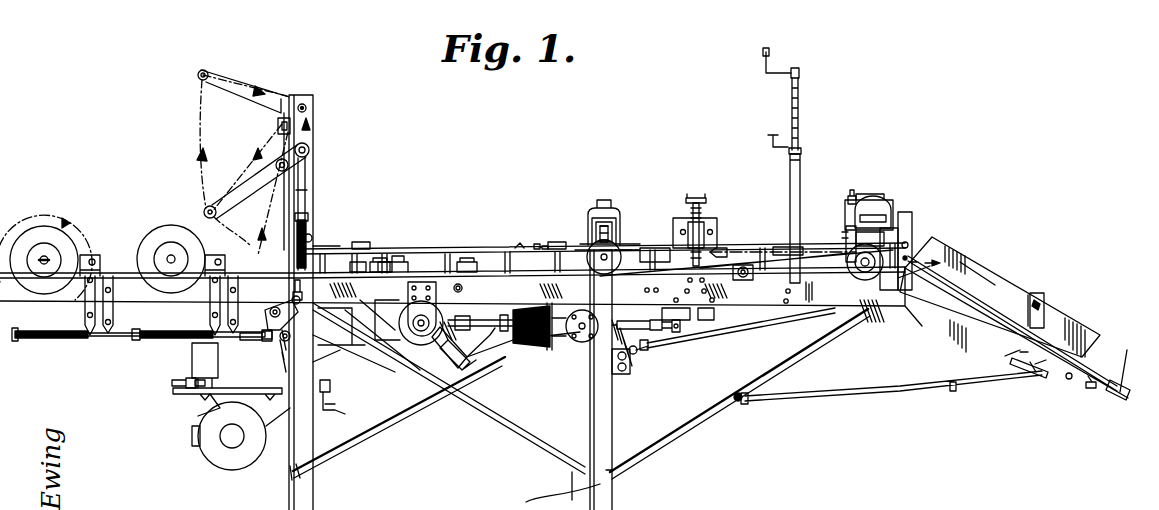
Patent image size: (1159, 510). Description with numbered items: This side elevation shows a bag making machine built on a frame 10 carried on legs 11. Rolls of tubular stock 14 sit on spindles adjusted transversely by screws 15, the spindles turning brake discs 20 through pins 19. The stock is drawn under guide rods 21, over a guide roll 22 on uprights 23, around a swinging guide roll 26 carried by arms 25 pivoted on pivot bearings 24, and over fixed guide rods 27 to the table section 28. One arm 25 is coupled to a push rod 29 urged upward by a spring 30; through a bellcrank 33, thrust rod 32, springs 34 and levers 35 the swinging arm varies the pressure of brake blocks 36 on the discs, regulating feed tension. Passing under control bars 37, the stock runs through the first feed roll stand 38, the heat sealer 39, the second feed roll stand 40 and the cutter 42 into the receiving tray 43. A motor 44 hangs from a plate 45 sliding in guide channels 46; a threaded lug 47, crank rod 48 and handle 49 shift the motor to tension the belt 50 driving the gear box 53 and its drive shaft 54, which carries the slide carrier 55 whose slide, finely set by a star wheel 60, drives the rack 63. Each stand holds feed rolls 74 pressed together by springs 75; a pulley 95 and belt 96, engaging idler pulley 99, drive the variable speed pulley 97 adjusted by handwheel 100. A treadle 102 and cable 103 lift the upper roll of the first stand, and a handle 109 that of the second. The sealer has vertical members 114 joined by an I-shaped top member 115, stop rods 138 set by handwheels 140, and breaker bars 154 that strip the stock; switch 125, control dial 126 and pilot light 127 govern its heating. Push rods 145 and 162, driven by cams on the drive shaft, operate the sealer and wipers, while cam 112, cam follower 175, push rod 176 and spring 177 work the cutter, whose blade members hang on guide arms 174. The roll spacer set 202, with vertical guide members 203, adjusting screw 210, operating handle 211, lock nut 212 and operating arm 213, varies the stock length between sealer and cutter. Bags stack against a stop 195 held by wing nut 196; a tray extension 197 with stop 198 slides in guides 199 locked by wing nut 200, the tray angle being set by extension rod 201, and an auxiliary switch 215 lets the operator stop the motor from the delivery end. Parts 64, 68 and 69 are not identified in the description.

The frame 10 is at (752, 300).
The legs 11 is at (303, 494).
The tubular stock 14 is at (65, 216).
The screws 15 is at (851, 230).
The pins 19 is at (170, 259).
The brake discs 20 is at (166, 236).
The guide rods 21 is at (108, 340).
The guide roll 22 is at (278, 124).
The uprights 23 is at (316, 135).
The pivot bearings 24 is at (282, 172).
The arms 25 is at (266, 195).
The swinging guide roll 26 is at (212, 219).
The guide rods 27 is at (208, 73).
The table section 28 is at (336, 247).
The push rod 29 is at (307, 186).
The spring 30 is at (302, 222).
The thrust rod 32 is at (130, 340).
The bellcrank 33 is at (290, 320).
The springs 34 is at (43, 340).
The levers 35 is at (84, 310).
The brake blocks 36 is at (88, 253).
The control bars 37 is at (368, 243).
The first feed roll stand 38 is at (609, 184).
The heat sealer 39 is at (698, 186).
The second feed roll stand 40 is at (868, 186).
The cutter 42 is at (907, 178).
The receiving tray 43 is at (972, 270).
The motor 44 is at (228, 458).
The plate 45 is at (182, 394).
The guide channels 46 is at (196, 398).
The internally threaded lug 47 is at (180, 380).
The threaded crank rod 48 is at (178, 387).
The handle 49 is at (330, 415).
The belt 50 is at (352, 372).
The gear box 53 is at (372, 312).
The drive shaft 54 is at (416, 332).
The slide carrier 55 is at (448, 360).
The star wheel 60 is at (473, 366).
The rack 63 is at (497, 352).
The plate 64 is at (548, 352).
The fitting 68 is at (384, 262).
The fitting 69 is at (398, 262).
The feed rolls 74 is at (616, 246).
The springs 75 is at (612, 228).
The pulley 95 is at (616, 256).
The belt 96 is at (740, 252).
The variable speed pulley 97 is at (896, 287).
The idler pulley 99 is at (742, 282).
The handwheel 100 is at (860, 278).
The treadle 102 is at (528, 504).
The rod or cable 103 is at (575, 478).
The handle 109 is at (858, 240).
The cam 112 is at (422, 336).
The vertical members 114 is at (728, 250).
The I-shaped top member 115 is at (716, 236).
The switch 125 is at (518, 249).
The control dial 126 is at (545, 247).
The pilot light 127 is at (537, 247).
The stop rods 138 is at (702, 222).
The handwheel 140 is at (702, 204).
The push rod 145 is at (622, 330).
The breaker bars 154 is at (722, 254).
The push rod 162 is at (481, 315).
The guide arms 174 is at (878, 212).
The cam follower 175 is at (458, 340).
The push rod 176 is at (570, 344).
The spring 177 is at (528, 348).
The stop 195 is at (1046, 316).
The wing nut 196 is at (1046, 300).
The tray extension 197 is at (1082, 380).
The stop 198 is at (1118, 370).
The guides 199 is at (1056, 374).
The wing nut 200 is at (1030, 350).
The extension rod 201 is at (916, 393).
The roll spacer set 202 is at (795, 64).
The vertical guide members 203 is at (801, 175).
The adjusting screw 210 is at (800, 112).
The operating handle 211 is at (770, 82).
The lock nut 212 is at (803, 150).
The operating arm 213 is at (778, 146).
The auxiliary switch 215 is at (1038, 382).